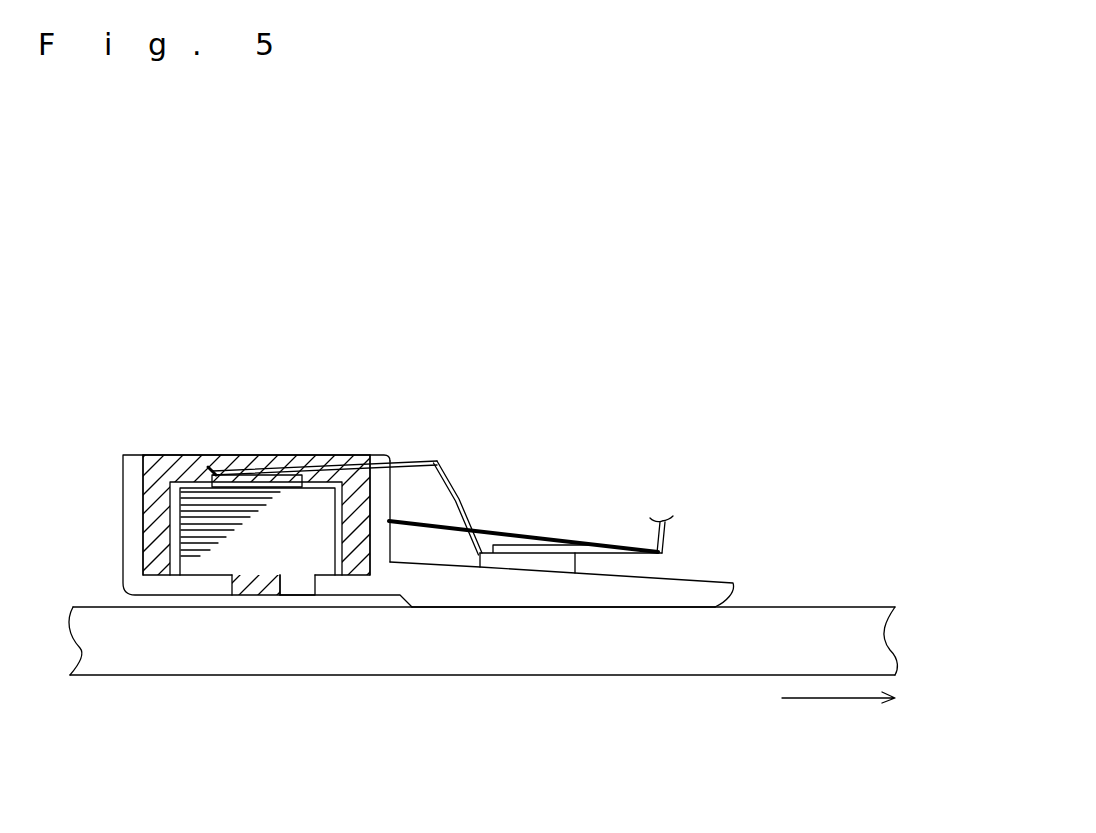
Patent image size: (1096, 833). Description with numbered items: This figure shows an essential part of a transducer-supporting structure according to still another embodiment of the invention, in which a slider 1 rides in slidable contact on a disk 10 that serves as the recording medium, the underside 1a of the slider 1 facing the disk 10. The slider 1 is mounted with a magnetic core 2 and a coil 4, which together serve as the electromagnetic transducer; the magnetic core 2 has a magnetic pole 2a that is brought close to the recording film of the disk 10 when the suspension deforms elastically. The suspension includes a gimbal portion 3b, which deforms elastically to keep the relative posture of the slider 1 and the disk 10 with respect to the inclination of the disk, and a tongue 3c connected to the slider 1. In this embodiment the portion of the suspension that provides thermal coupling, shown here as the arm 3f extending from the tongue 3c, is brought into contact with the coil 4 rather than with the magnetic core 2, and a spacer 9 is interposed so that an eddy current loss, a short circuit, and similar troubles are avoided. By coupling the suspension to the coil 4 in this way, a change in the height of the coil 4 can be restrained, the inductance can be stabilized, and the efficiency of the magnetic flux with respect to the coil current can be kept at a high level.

The slider 1 is at (702, 577).
The slider bottom surface 1a is at (580, 607).
The magnetic core 2 is at (277, 455).
The magnetic pole 2a is at (257, 580).
The gimbal portion 3b is at (598, 546).
The tongue 3c is at (633, 557).
The armature arm 3f is at (422, 460).
The coil 4 is at (316, 580).
The spacer 9 is at (183, 455).
The disk 10 is at (498, 677).